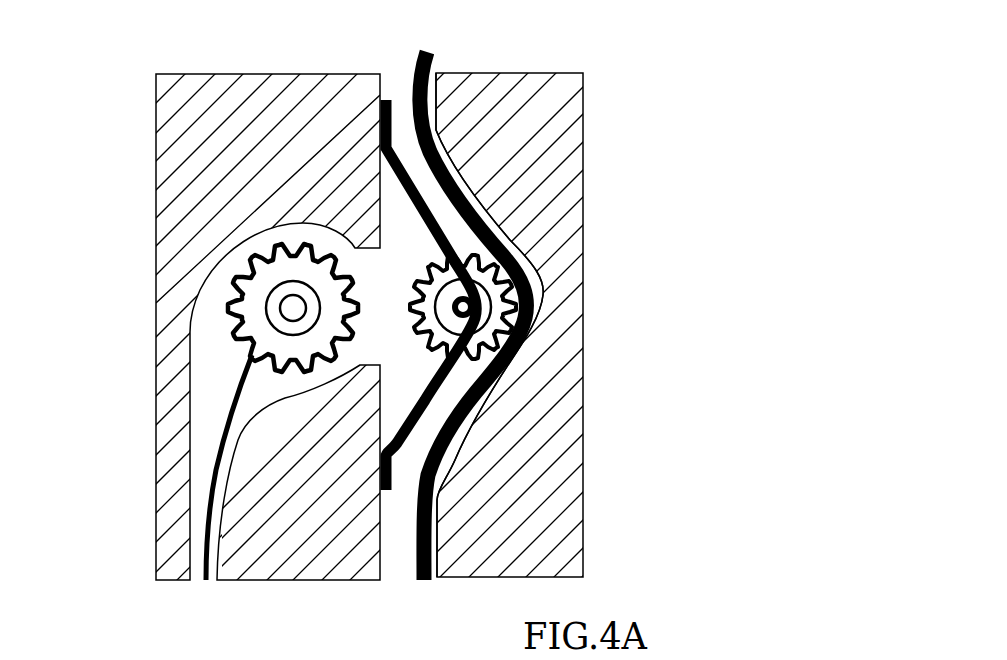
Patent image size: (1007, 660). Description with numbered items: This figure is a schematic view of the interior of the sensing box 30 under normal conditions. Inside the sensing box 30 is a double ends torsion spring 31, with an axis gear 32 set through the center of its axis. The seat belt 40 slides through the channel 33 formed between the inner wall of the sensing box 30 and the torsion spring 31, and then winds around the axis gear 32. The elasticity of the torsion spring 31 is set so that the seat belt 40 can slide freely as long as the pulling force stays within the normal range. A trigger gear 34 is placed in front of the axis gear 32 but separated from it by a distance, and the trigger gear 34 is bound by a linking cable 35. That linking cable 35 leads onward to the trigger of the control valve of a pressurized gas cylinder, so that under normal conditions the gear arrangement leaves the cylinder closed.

The sensing box 30 is at (543, 147).
The double ends torsion spring 31 is at (382, 238).
The axis gear 32 is at (530, 307).
The channel 33 is at (434, 102).
The trigger gear 34 is at (280, 272).
The linking cable 35 is at (207, 488).
The seat belt 40 is at (435, 45).